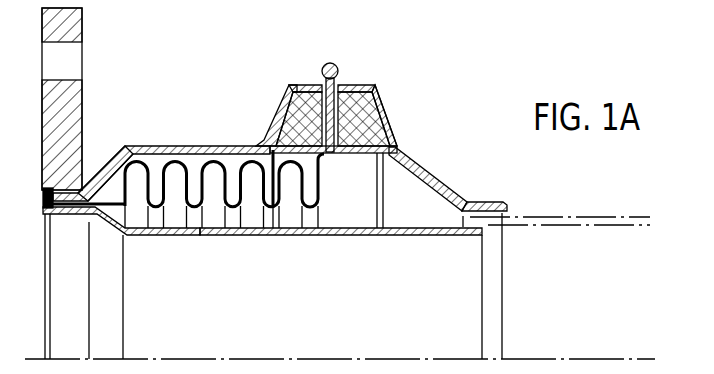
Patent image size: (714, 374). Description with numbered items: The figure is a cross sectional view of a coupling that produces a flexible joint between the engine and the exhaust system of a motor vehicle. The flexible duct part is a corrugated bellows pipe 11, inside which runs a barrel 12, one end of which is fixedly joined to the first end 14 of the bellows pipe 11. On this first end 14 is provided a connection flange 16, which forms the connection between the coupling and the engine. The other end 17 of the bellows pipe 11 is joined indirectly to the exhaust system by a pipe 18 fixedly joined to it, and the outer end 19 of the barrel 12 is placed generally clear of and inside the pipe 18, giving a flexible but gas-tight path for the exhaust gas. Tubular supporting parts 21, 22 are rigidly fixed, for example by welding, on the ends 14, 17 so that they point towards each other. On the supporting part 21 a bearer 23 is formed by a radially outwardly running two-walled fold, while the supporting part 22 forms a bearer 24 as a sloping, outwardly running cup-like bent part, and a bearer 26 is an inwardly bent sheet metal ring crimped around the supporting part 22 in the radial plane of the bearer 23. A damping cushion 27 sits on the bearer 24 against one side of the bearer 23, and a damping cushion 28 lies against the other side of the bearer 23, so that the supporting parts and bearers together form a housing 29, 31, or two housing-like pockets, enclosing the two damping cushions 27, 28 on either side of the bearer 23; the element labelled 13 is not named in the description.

The bellows pipe 11 is at (210, 170).
The barrel 12 is at (205, 236).
The flange plate 13 is at (70, 217).
The first end 14 is at (88, 186).
The connection flange 16 is at (75, 103).
The other end 17 is at (400, 150).
The pipe 18 is at (487, 203).
The outer end 19 is at (418, 236).
The tubular supporting part 21 is at (393, 113).
The tubular supporting part 22 is at (170, 147).
The bearer 23 is at (336, 92).
The bearer 24 is at (277, 115).
The bearer 26 is at (395, 130).
The damping cushion 27 is at (300, 87).
The damping cushion 28 is at (392, 97).
The housing 29 is at (341, 116).
The housing 31 is at (310, 64).